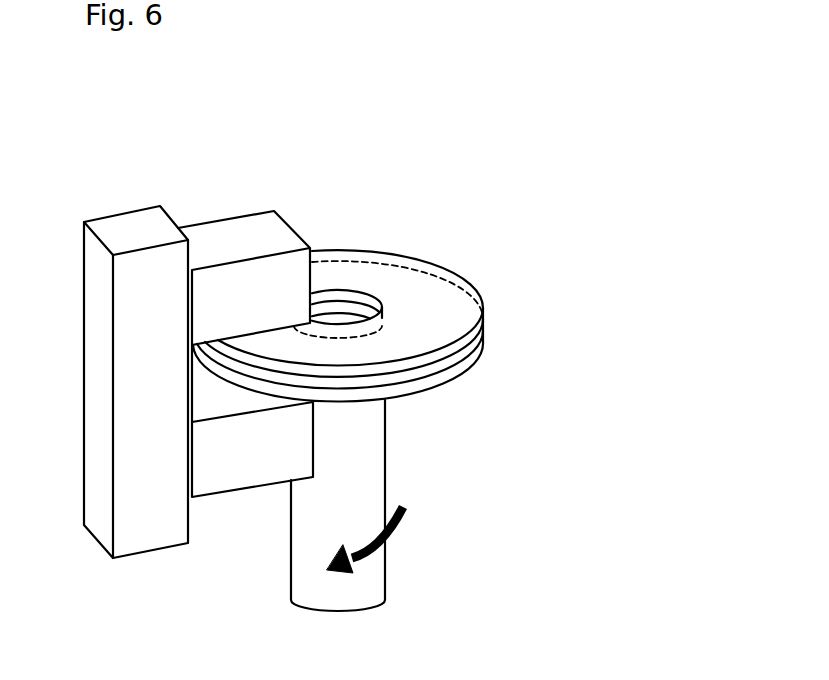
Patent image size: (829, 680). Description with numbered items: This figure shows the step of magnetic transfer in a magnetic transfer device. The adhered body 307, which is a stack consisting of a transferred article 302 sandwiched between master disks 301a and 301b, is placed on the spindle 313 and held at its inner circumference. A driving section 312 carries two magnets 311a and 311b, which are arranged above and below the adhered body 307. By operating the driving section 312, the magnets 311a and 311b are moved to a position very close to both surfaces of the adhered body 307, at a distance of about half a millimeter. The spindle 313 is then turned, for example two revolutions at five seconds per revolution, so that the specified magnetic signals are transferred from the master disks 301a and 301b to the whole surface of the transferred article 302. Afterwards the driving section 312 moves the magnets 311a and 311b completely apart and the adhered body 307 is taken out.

The adhered body 307 is at (419, 325).
The master disk 301a is at (463, 363).
The master disk 301b is at (465, 276).
The transferred article 302 is at (483, 332).
The magnet 311a is at (252, 470).
The magnet 311b is at (218, 232).
The driving section 312 is at (145, 537).
The spindle 313 is at (386, 592).